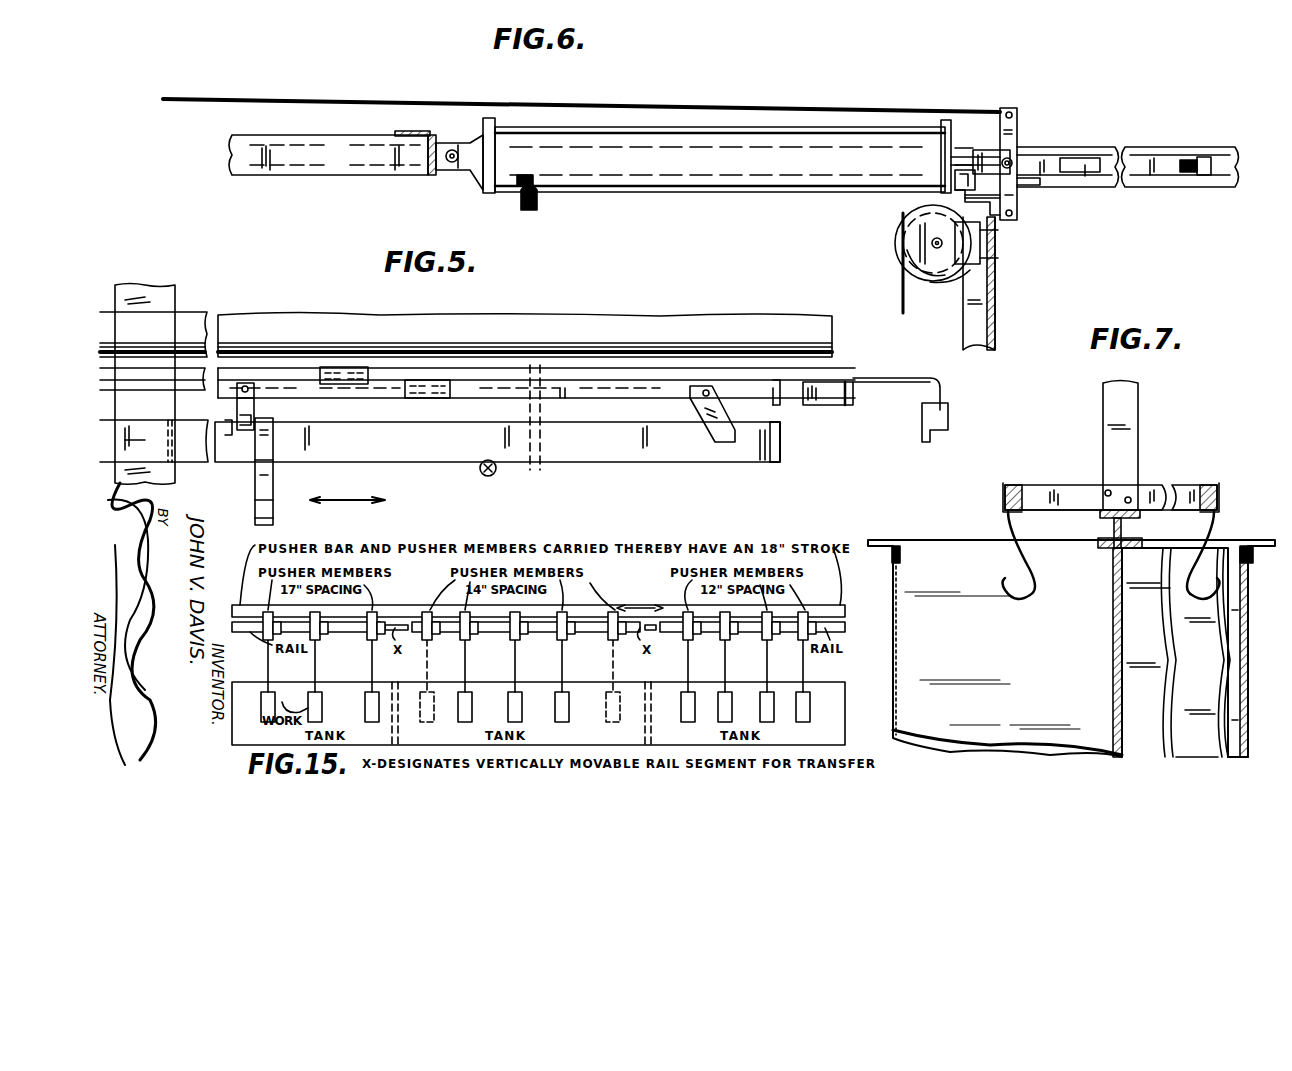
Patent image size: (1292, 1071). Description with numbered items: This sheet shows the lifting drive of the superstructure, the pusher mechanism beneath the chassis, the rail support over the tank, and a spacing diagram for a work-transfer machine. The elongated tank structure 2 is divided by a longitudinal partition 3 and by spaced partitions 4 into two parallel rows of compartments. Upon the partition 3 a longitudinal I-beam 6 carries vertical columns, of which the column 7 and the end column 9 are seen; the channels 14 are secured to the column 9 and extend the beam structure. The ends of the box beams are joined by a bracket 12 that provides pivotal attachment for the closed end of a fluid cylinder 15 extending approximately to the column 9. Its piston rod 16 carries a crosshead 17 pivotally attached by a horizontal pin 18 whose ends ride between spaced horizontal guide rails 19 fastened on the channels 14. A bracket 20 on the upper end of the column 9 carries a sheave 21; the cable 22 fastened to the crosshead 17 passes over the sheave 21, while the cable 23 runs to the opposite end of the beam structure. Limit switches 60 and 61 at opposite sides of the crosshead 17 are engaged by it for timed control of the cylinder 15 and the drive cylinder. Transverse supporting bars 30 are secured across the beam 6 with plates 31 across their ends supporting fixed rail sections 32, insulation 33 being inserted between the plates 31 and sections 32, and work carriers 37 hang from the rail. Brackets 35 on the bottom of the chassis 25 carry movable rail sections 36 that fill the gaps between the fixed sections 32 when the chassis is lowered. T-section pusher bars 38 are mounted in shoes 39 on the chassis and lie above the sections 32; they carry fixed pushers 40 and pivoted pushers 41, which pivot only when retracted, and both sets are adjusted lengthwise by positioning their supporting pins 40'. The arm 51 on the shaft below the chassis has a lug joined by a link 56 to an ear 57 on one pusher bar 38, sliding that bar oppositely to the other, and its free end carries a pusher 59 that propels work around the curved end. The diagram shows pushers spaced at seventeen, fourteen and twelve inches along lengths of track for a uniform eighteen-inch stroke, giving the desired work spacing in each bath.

In FIG. 7, the tank structure 2 is at (893, 656).
In FIG. 7, the longitudinal partition 3 is at (1115, 665).
In FIG. 7, the spaced partitions 4 is at (915, 702).
In FIG. 7, the longitudinal I-beam 6 is at (1125, 520).
In FIG. 7, the vertical column 7 is at (1125, 395).
In FIG. 6, the end vertical column 9 is at (985, 335).
In FIG. 6, the bracket 12 is at (410, 134).
In FIG. 6, the channels 14 is at (1165, 190).
In FIG. 6, the fluid cylinder 15 is at (660, 178).
In FIG. 6, the piston rod 16 is at (958, 150).
In FIG. 6, the crosshead 17 is at (1008, 108).
In FIG. 6, the horizontal pin 18 is at (1035, 183).
In FIG. 6, the guide rails 19 is at (1072, 160).
In FIG. 6, the bracket 20 is at (975, 250).
In FIG. 6, the sheave 21 is at (935, 282).
In FIG. 6, the cable 22 is at (903, 300).
In FIG. 6, the cable 23 is at (885, 110).
In FIG. 5, the chassis 25 is at (703, 328).
In FIG. 7, the transverse supporting bars 30 is at (1072, 490).
In FIG. 7, the plates 31 is at (1020, 512).
In FIG. 7, the fixed rail sections 32 is at (1003, 498).
In FIG. 7, the insulation 33 is at (1018, 487).
In FIG. 5, the brackets 35 is at (552, 458).
In FIG. 5, the movable rail sections 36 is at (483, 465).
In FIG. 5, the work carriers 37 is at (273, 478).
In FIG. 7, the work carriers 37 is at (1208, 525).
In FIG. 5, the pusher bars 38 is at (773, 392).
In FIG. 5, the shoes 39 is at (352, 375).
In FIG. 5, the fixed pushers 40 is at (234, 439).
In FIG. 5, the supporting pins 40' is at (279, 342).
In FIG. 5, the pivoted pushers 41 is at (730, 425).
In FIG. 5, the fixed arm 51 is at (910, 378).
In FIG. 5, the link 56 is at (812, 392).
In FIG. 5, the ear 57 is at (428, 388).
In FIG. 5, the pushers 59 is at (925, 425).
In FIG. 6, the limit switch 60 is at (945, 205).
In FIG. 6, the limit switch 61 is at (1190, 158).